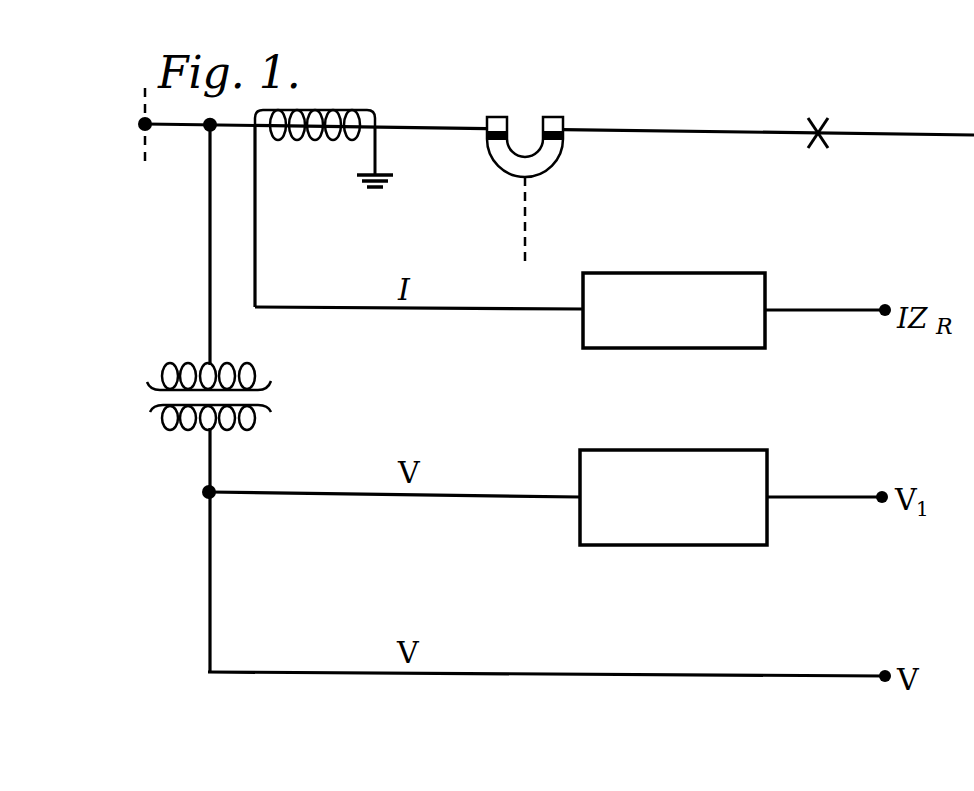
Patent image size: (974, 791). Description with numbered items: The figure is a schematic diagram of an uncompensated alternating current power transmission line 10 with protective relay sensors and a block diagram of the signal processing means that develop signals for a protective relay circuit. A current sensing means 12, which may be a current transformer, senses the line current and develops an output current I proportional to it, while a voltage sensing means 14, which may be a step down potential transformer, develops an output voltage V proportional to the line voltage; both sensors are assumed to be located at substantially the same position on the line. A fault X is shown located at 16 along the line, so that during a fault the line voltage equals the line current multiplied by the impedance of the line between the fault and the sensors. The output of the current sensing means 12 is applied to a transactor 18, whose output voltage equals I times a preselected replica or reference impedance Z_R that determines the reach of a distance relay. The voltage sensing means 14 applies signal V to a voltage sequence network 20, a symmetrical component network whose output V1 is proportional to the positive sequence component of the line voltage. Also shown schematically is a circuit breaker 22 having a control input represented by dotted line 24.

The alternating current power transmission line 10 is at (698, 102).
The current sensing means 12 is at (318, 108).
The voltage sensing means 14 is at (180, 366).
The fault location 16 is at (823, 128).
The transactor 18 is at (703, 272).
The voltage sequence network 20 is at (708, 449).
The circuit breaker 22 is at (515, 150).
The control input 24 is at (527, 203).